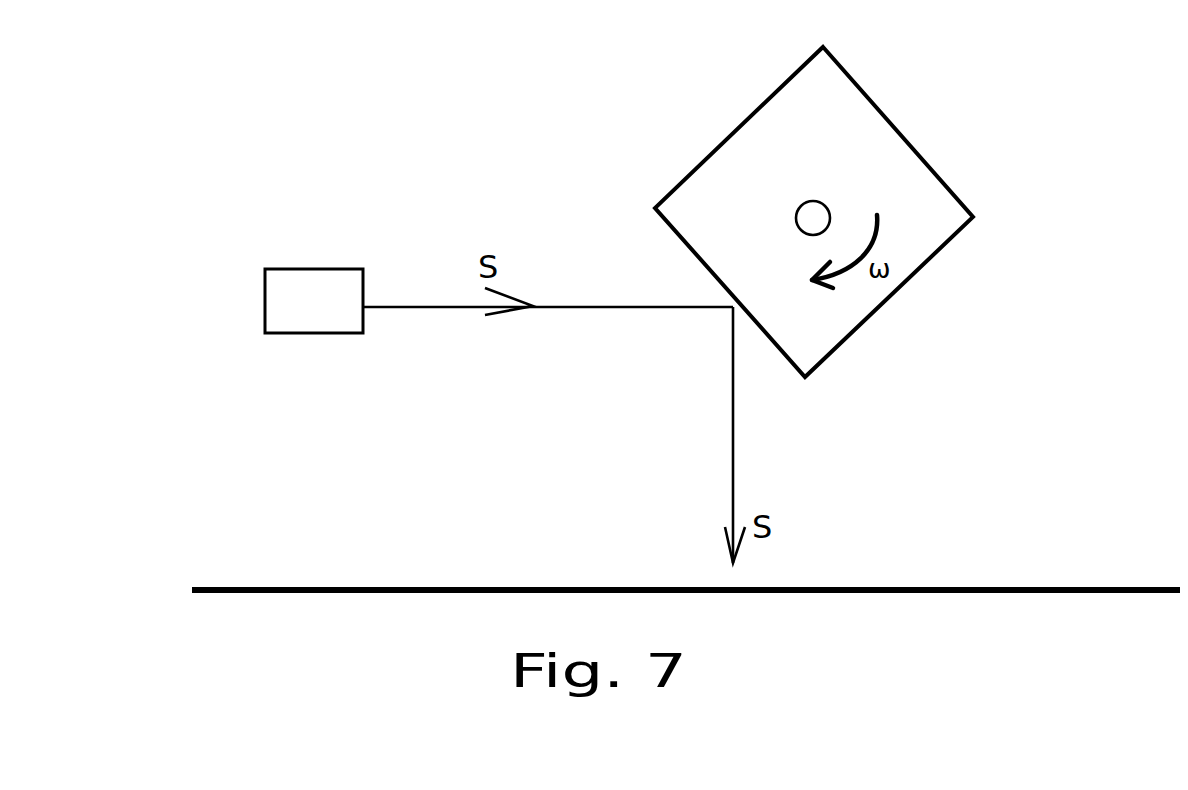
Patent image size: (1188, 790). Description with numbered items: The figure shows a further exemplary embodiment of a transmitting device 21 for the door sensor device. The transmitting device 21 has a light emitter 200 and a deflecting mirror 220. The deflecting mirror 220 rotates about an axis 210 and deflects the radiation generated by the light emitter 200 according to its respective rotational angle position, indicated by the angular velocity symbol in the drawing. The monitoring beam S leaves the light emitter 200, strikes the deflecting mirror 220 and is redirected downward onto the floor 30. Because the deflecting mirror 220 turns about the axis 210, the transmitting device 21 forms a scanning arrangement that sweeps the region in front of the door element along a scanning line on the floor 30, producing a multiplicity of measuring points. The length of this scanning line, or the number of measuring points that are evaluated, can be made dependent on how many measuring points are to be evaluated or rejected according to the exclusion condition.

The light emitter 200 is at (327, 297).
The axis 210 is at (804, 218).
The deflecting mirror 220 is at (822, 323).
The transmitting device 21 is at (1008, 314).
The floor 30 is at (887, 587).